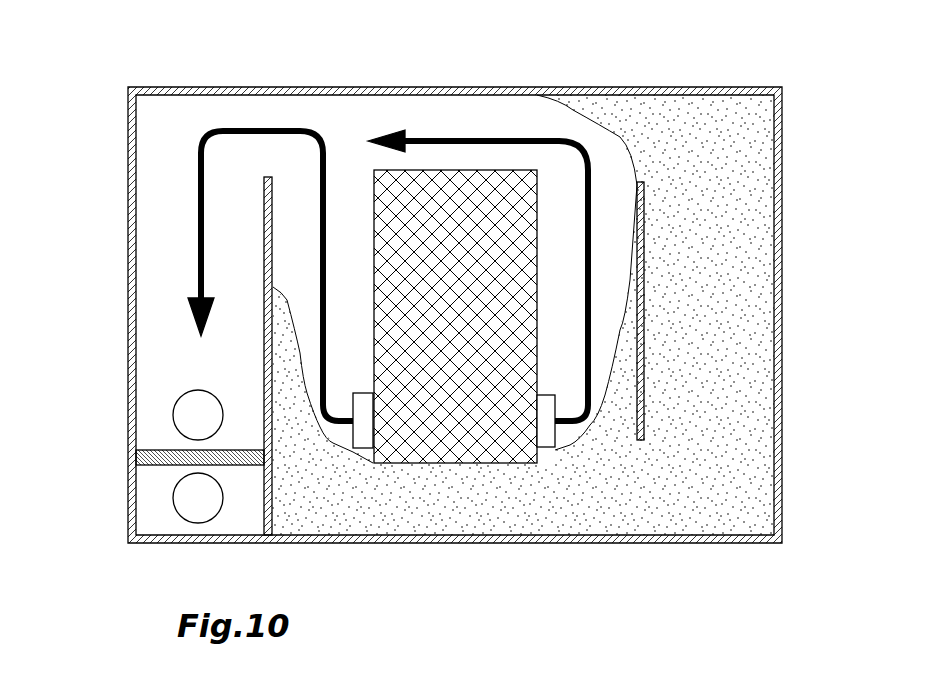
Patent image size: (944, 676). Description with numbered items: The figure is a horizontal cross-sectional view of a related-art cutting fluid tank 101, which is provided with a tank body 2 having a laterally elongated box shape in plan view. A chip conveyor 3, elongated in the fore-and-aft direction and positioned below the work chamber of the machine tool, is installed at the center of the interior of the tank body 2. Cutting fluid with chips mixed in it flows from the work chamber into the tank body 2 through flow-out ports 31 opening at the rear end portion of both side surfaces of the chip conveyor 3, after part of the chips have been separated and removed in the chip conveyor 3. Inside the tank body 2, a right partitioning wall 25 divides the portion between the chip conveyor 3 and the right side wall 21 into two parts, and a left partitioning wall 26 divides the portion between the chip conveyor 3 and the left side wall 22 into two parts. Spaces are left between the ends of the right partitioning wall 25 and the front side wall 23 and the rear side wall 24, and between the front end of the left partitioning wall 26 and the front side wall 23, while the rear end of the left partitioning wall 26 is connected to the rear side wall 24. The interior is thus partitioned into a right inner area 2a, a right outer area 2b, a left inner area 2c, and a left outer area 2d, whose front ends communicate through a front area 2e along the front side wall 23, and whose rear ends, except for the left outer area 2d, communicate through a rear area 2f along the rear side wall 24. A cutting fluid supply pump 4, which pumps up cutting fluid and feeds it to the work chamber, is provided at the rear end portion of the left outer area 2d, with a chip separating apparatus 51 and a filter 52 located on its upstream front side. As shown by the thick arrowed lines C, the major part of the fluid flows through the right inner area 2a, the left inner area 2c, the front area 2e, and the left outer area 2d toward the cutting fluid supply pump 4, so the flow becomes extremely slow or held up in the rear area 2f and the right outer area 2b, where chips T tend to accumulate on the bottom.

The tank body 2 is at (782, 320).
The right inner area 2a is at (580, 276).
The right outer area 2b is at (736, 359).
The left inner area 2c is at (368, 269).
The left outer area 2d is at (186, 273).
The front area 2e is at (483, 132).
The rear area 2f is at (500, 517).
The chip conveyor 3 is at (398, 452).
The cutting fluid supply pump 4 is at (193, 508).
The right side wall 21 is at (782, 228).
The left side wall 22 is at (128, 222).
The front side wall 23 is at (437, 88).
The rear side wall 24 is at (452, 545).
The right partitioning wall 25 is at (648, 212).
The left partitioning wall 26 is at (265, 233).
The flow-out ports 31 is at (352, 435).
The chip separating apparatus 51 is at (188, 415).
The filter 52 is at (163, 449).
The cutting fluid tank 101 is at (553, 83).
The thick lines with an arrow C is at (413, 135).
The chips T is at (730, 430).